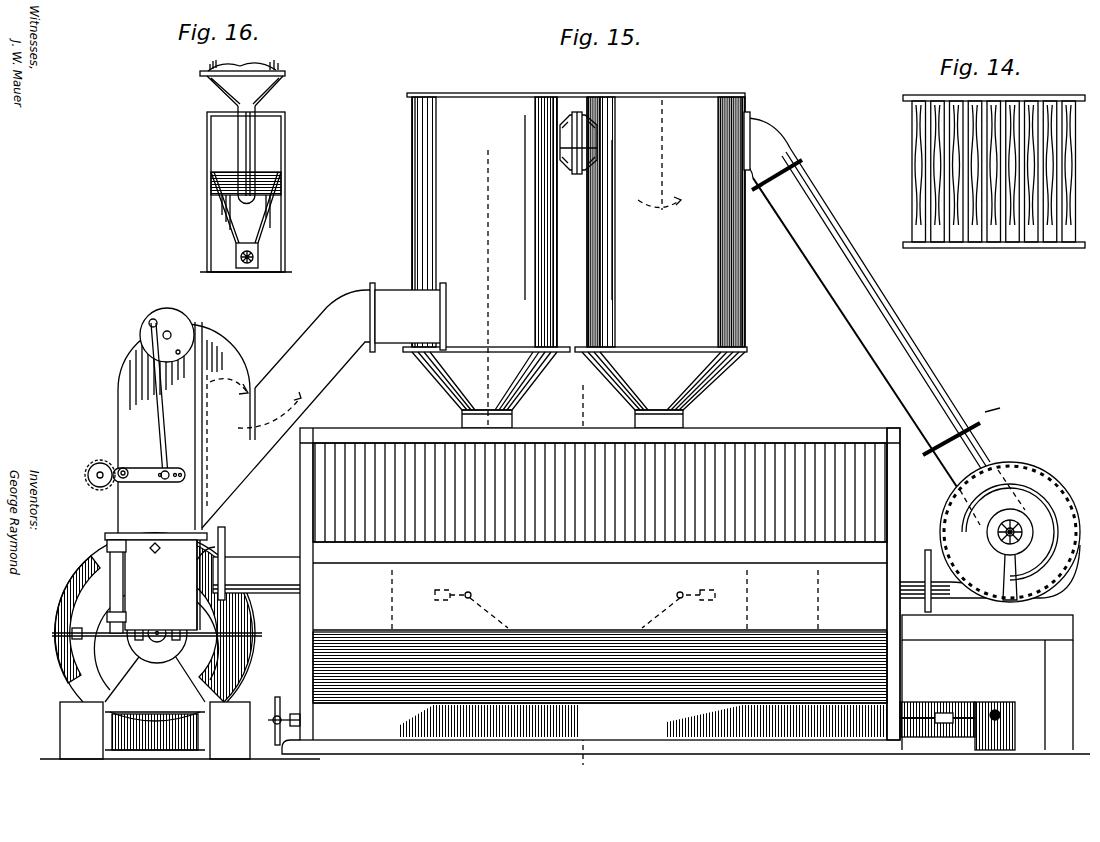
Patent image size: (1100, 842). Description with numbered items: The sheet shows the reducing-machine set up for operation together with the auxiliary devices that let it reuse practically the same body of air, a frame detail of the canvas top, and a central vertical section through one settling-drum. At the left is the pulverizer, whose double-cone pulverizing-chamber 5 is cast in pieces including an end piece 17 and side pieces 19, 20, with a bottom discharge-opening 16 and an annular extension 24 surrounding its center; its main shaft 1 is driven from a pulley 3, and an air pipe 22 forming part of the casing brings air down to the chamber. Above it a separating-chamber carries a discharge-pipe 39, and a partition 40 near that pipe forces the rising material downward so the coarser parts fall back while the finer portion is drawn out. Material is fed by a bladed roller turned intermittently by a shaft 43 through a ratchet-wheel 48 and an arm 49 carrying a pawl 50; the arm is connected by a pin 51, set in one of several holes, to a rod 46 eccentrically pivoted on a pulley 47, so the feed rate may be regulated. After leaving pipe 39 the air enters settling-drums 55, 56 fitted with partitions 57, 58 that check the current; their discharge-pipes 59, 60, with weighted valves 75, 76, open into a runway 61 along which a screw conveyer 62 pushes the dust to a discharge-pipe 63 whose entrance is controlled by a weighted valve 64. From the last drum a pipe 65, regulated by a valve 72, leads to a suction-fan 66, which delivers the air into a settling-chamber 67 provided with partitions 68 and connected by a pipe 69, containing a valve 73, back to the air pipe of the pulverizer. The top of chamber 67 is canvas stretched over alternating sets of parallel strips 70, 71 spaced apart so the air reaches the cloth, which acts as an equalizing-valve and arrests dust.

In FIG. 15, the main shaft 1 is at (155, 643).
In FIG. 15, the pulley 3 is at (156, 610).
In FIG. 15, the pulverizing-chamber 5 is at (155, 632).
In FIG. 15, the bottom discharge-opening 16 is at (137, 760).
In FIG. 15, the end piece 17 is at (156, 581).
In FIG. 15, the side piece 19 is at (250, 607).
In FIG. 15, the side piece 20 is at (84, 567).
In FIG. 15, the air pipe 22 is at (190, 566).
In FIG. 15, the annular extension 24 is at (108, 554).
In FIG. 15, the discharge-pipe 39 is at (324, 405).
In FIG. 15, the partition 40 is at (212, 404).
In FIG. 15, the shaft 43 is at (99, 479).
In FIG. 15, the rod 46 is at (152, 378).
In FIG. 15, the pulley 47 is at (167, 335).
In FIG. 15, the ratchet-wheel 48 is at (98, 461).
In FIG. 15, the arm 49 is at (149, 475).
In FIG. 15, the pawl 50 is at (126, 468).
In FIG. 15, the pin 51 is at (163, 480).
In FIG. 15, the settling-drum 55 is at (576, 220).
In FIG. 16, the settling-drum 56 is at (283, 73).
In FIG. 15, the settling-drum 56 is at (666, 222).
In FIG. 15, the partition 57 is at (488, 232).
In FIG. 15, the partition 58 is at (668, 150).
In FIG. 15, the discharge-pipe 59 is at (486, 488).
In FIG. 16, the discharge-pipe 60 is at (248, 133).
In FIG. 15, the discharge-pipe 60 is at (661, 488).
In FIG. 16, the runway 61 is at (254, 257).
In FIG. 15, the runway 61 is at (431, 721).
In FIG. 15, the screw conveyer 62 is at (920, 700).
In FIG. 15, the discharge-pipe 63 is at (1015, 722).
In FIG. 15, the weighted valve 64 is at (990, 700).
In FIG. 15, the pipe 65 is at (867, 299).
In FIG. 15, the suction-fan 66 is at (990, 537).
In FIG. 16, the settling-chamber 67 is at (272, 223).
In FIG. 15, the settling-chamber 67 is at (600, 584).
In FIG. 16, the partitions 68 is at (246, 201).
In FIG. 15, the partitions 68 is at (755, 610).
In FIG. 15, the pipe 69 is at (257, 575).
In FIG. 14, the parallel strips 70 is at (1000, 243).
In FIG. 15, the parallel strips 70 is at (828, 450).
In FIG. 14, the parallel strips 71 is at (1010, 110).
In FIG. 15, the parallel strips 71 is at (840, 530).
In FIG. 15, the valve 72 is at (988, 420).
In FIG. 15, the valve 73 is at (226, 530).
In FIG. 15, the weighted valve 75 is at (495, 622).
In FIG. 15, the weighted valve 76 is at (670, 622).